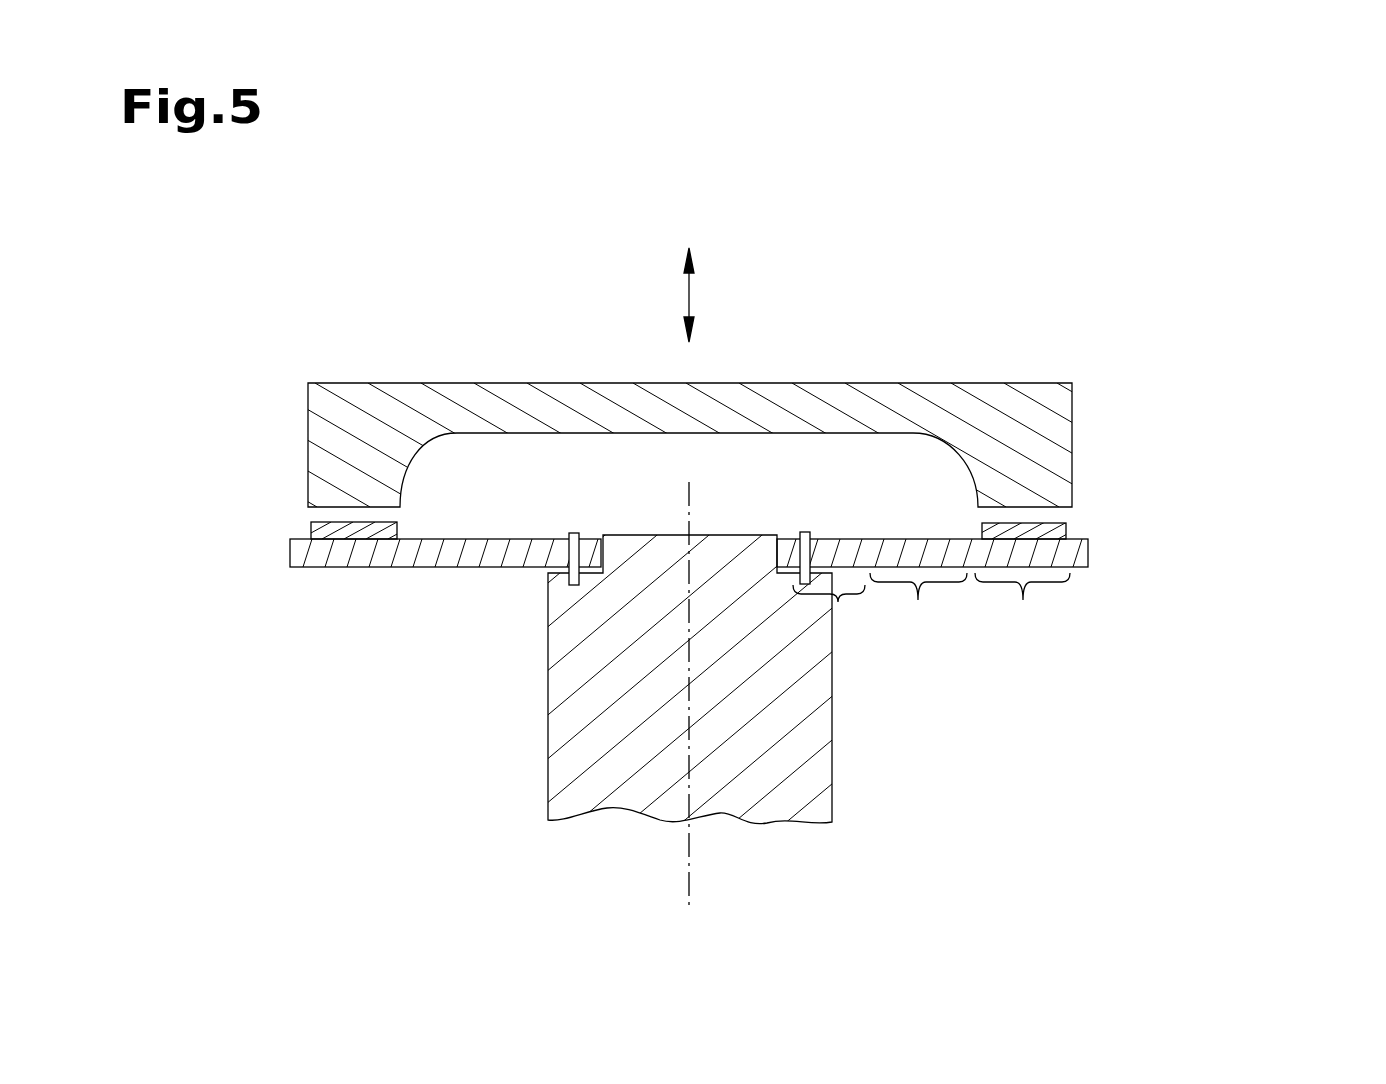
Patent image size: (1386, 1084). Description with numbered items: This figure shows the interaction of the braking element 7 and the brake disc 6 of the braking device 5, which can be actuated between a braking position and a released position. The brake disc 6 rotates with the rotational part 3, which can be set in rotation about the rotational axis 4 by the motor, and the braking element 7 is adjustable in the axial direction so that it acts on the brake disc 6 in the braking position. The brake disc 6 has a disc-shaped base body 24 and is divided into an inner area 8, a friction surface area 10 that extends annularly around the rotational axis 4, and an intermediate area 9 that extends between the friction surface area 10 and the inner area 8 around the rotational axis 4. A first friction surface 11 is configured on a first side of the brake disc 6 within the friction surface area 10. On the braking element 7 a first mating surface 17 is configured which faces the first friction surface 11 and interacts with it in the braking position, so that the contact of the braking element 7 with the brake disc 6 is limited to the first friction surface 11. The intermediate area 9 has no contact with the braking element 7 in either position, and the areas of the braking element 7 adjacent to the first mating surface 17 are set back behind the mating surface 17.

The rotational part 3 is at (718, 708).
The rotational axis 4 is at (689, 631).
The braking device 5 is at (674, 415).
The brake disc 6 is at (1088, 553).
The braking element 7 is at (1072, 420).
The inner area 8 is at (829, 607).
The intermediate area 9 is at (918, 606).
The friction surface area 10 is at (1022, 606).
The first friction surface 11 is at (1003, 521).
The first mating surface 17 is at (1028, 506).
The disc-shaped base body 24 is at (452, 567).